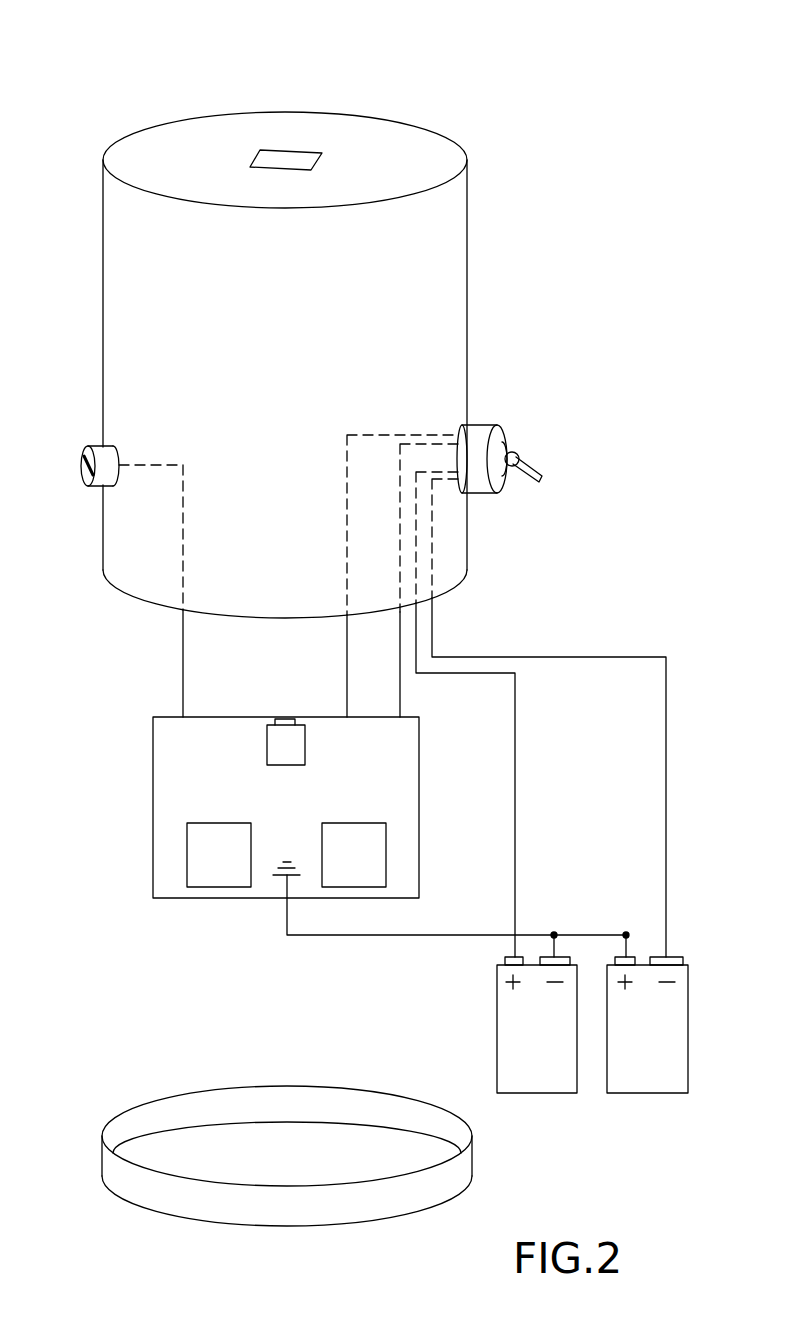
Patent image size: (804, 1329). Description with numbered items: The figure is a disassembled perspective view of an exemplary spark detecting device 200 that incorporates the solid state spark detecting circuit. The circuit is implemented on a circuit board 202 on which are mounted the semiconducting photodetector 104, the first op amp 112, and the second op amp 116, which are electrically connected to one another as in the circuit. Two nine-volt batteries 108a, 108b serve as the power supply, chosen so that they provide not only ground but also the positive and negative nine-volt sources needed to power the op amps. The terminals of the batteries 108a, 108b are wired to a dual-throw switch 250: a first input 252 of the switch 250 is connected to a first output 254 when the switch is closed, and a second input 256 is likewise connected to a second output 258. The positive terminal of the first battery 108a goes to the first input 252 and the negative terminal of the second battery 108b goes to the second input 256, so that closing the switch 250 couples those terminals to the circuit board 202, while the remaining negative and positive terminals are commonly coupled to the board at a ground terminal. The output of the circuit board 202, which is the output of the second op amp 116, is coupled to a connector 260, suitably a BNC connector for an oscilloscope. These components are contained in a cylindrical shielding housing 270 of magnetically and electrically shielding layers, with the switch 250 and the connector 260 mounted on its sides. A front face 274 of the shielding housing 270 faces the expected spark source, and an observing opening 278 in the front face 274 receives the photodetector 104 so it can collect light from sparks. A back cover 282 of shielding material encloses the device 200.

The spark detecting device 200 is at (607, 120).
The shielding housing 270 is at (469, 282).
The front face 274 is at (168, 137).
The observing opening 278 is at (285, 158).
The connector 260 is at (97, 448).
The dual-throw switch 250 is at (505, 432).
The first input 252 is at (445, 481).
The first output 254 is at (460, 443).
The second input 256 is at (454, 476).
The second output 258 is at (457, 437).
The circuit board 202 is at (153, 745).
The semiconducting photodetector 104 is at (267, 747).
The first op amp 112 is at (187, 858).
The second op amp 116 is at (386, 857).
The first battery 108a is at (538, 1095).
The second battery 108b is at (652, 1095).
The back cover 282 is at (192, 1092).